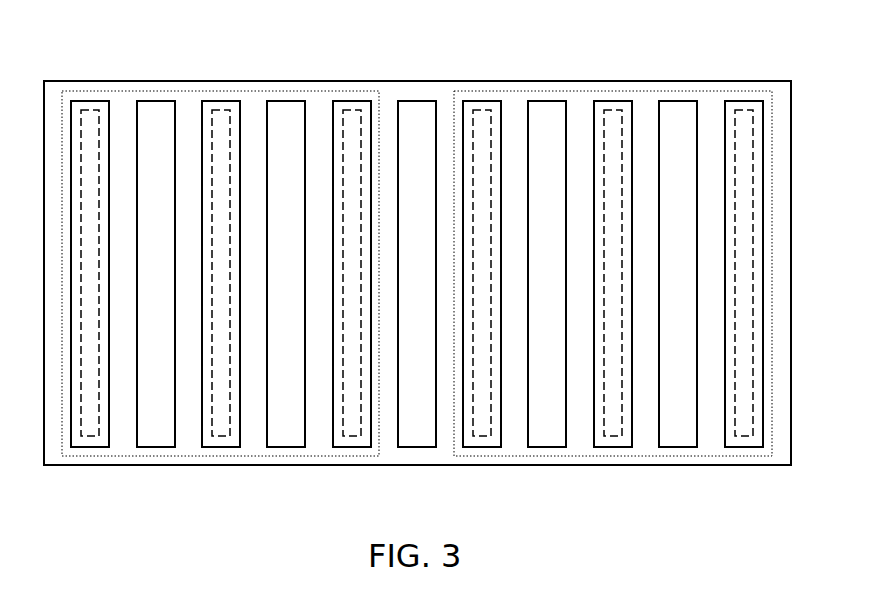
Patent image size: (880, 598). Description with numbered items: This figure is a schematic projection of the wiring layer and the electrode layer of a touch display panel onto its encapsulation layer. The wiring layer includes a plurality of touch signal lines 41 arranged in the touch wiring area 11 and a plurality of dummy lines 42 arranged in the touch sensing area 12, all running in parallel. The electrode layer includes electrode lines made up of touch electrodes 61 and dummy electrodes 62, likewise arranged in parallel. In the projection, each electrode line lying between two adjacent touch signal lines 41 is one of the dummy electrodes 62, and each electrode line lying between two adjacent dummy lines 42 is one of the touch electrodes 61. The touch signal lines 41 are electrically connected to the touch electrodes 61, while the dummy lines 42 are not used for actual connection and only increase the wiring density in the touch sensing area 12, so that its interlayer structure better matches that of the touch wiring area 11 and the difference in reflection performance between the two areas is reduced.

The touch wiring area 11 is at (62, 455).
The touch sensing area 12 is at (772, 455).
The touch signal line 41 is at (92, 108).
The dummy line 42 is at (748, 109).
The touch electrode 61 is at (535, 100).
The dummy electrode 62 is at (282, 100).